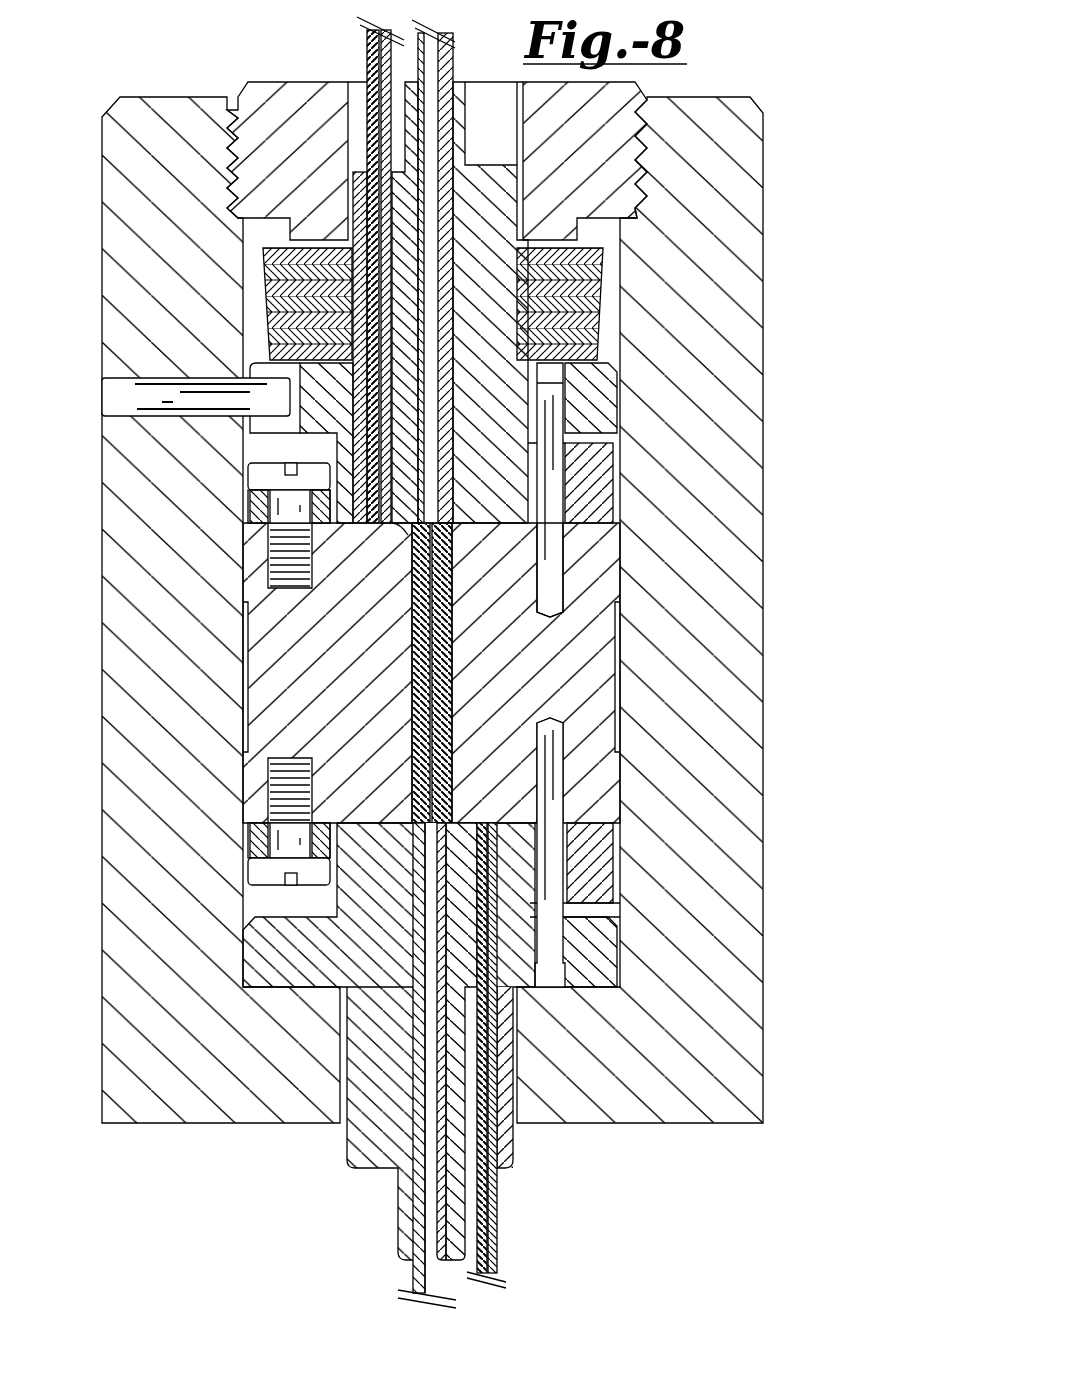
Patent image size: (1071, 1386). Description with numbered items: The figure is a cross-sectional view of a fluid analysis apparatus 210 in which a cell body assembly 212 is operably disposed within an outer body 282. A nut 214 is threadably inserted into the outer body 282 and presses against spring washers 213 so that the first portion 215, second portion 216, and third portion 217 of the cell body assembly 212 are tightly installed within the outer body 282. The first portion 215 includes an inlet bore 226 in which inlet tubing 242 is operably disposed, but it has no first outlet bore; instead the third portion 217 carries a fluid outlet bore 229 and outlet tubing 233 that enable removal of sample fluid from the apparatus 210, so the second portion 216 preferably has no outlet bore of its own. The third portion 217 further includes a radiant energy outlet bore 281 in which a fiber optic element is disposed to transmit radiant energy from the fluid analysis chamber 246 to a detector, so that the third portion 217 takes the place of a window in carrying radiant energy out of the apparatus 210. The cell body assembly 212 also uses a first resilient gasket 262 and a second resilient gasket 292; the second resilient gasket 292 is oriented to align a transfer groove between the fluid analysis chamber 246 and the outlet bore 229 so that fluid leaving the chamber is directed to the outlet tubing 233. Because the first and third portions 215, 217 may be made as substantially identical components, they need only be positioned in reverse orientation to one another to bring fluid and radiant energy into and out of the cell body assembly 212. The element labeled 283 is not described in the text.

The apparatus 210 is at (778, 103).
The cell body assembly 212 is at (250, 78).
The spring washers 213 is at (603, 250).
The nut 214 is at (638, 84).
The first portion 215 is at (355, 405).
The second portion 216 is at (340, 672).
The third portion 217 is at (372, 966).
The inlet bore 226 is at (357, 172).
The fluid outlet bore 229 is at (498, 1170).
The outlet tubing 233 is at (498, 1258).
The inlet tubing 242 is at (367, 48).
The fluid analysis chamber 246 is at (412, 783).
The first resilient gasket 262 is at (407, 530).
The radiant energy outlet bore 281 is at (413, 1122).
The outer body 282 is at (100, 1018).
The central tube 283 is at (432, 1257).
The second resilient gasket 292 is at (463, 822).